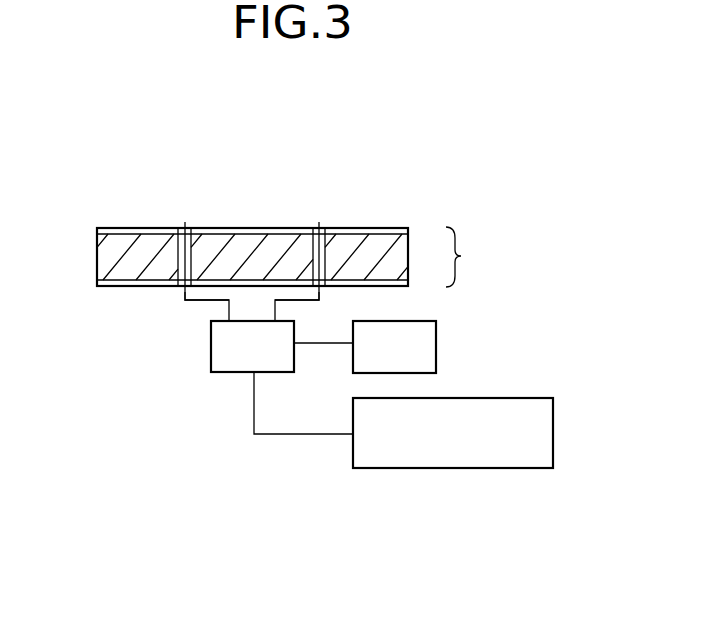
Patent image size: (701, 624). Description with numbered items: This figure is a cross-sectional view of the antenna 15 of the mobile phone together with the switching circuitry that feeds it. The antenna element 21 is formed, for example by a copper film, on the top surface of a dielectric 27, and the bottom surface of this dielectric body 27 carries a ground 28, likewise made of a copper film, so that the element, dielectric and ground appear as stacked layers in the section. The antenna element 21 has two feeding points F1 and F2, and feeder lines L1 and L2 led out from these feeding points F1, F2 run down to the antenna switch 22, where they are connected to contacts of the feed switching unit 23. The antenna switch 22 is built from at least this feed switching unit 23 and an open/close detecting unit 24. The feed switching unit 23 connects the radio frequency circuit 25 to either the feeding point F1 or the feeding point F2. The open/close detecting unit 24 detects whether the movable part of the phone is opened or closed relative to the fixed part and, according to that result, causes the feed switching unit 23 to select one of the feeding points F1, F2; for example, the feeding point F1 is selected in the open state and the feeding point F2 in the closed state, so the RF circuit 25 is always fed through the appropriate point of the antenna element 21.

The antenna 15 is at (267, 113).
The antenna element 21 is at (249, 228).
The dielectric 27 is at (97, 245).
The ground 28 is at (97, 288).
The feeding point F1 is at (198, 257).
The feeding point F2 is at (308, 257).
The feeder line L1 is at (184, 293).
The feeder line L2 is at (321, 292).
The feed switching unit 23 is at (211, 347).
The radio frequency circuit 25 is at (436, 350).
The antenna switch 22 is at (308, 418).
The open/close detecting unit 24 is at (553, 430).